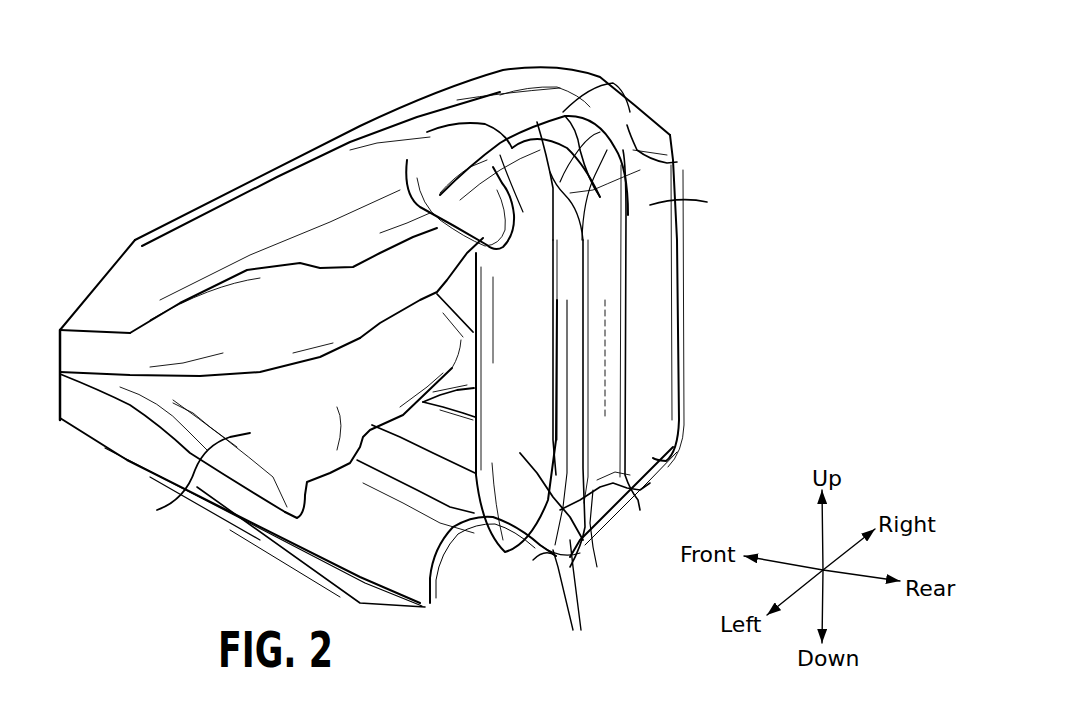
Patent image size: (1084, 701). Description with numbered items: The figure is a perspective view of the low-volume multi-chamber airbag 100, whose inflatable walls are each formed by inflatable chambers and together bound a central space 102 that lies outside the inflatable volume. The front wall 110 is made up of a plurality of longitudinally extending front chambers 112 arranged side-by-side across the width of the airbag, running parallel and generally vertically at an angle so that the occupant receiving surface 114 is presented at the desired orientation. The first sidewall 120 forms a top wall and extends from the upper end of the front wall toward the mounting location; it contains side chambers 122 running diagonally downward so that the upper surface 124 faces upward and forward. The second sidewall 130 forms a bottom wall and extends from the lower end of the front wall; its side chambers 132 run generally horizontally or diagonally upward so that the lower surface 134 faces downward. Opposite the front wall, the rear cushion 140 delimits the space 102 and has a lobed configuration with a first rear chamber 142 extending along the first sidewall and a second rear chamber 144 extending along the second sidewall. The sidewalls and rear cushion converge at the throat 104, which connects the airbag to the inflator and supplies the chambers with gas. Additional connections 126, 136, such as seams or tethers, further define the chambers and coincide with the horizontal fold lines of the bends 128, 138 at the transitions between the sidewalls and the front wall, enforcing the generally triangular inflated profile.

The airbag 100 is at (250, 129).
The central space 102 is at (432, 456).
The throat 104 is at (72, 316).
The front wall 110 is at (603, 350).
The front chambers 112 is at (613, 245).
The occupant receiving surface 114 is at (612, 289).
The first sidewall 120 is at (347, 207).
The side chambers 122 is at (503, 83).
The upper surface 124 is at (362, 147).
The connections 126 is at (600, 197).
The bends 128 is at (492, 175).
The second sidewall 130 is at (253, 518).
The side chambers 132 is at (470, 567).
The lower surface 134 is at (278, 548).
The connections 136 is at (655, 456).
The bends 138 is at (668, 477).
The rear cushion 140 is at (165, 388).
The first rear chamber 142 is at (140, 246).
The second rear chamber 144 is at (160, 508).